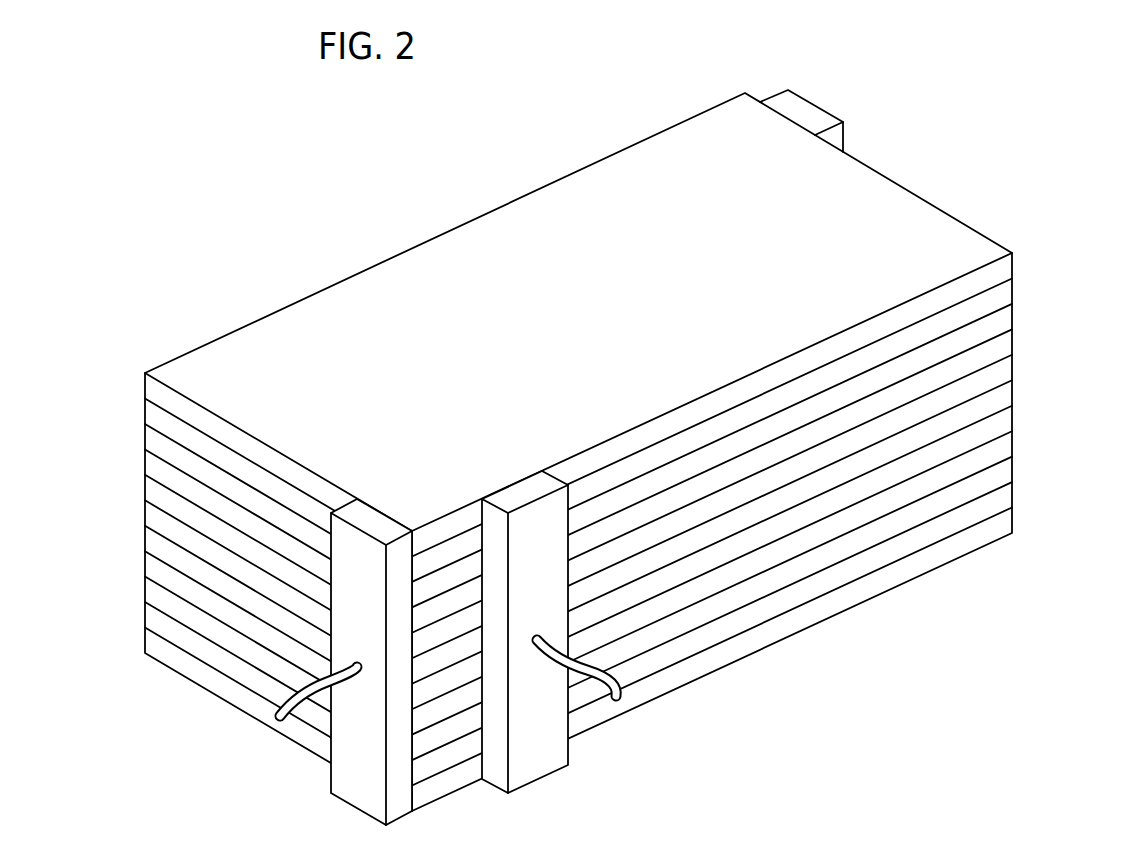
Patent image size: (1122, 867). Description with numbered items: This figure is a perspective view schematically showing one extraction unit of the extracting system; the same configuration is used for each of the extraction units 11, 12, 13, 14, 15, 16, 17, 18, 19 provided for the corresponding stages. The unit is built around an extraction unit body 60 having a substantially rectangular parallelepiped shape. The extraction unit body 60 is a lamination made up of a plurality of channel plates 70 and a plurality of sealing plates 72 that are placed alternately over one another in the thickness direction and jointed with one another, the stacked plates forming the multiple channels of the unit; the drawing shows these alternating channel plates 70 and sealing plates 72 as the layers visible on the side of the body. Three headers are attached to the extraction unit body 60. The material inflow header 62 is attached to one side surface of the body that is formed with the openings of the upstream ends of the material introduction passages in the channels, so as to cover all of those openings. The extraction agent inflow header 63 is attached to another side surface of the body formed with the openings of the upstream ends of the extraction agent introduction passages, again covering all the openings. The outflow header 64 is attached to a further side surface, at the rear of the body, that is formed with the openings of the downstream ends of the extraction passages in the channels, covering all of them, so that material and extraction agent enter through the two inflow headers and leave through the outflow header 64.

The extraction unit 11 is at (1108, 63).
The extraction unit 12 is at (542, 457).
The extraction unit 13 is at (542, 457).
The extraction unit 14 is at (542, 457).
The extraction unit 15 is at (542, 457).
The extraction unit 16 is at (542, 457).
The extraction unit 17 is at (542, 457).
The extraction unit 18 is at (542, 457).
The extraction unit 19 is at (542, 457).
The extraction unit body 60 is at (535, 236).
The material inflow header 62 is at (345, 745).
The extraction agent inflow header 63 is at (552, 723).
The outflow header 64 is at (830, 112).
The channel plate 70 is at (152, 414).
The sealing plate 72 is at (152, 389).